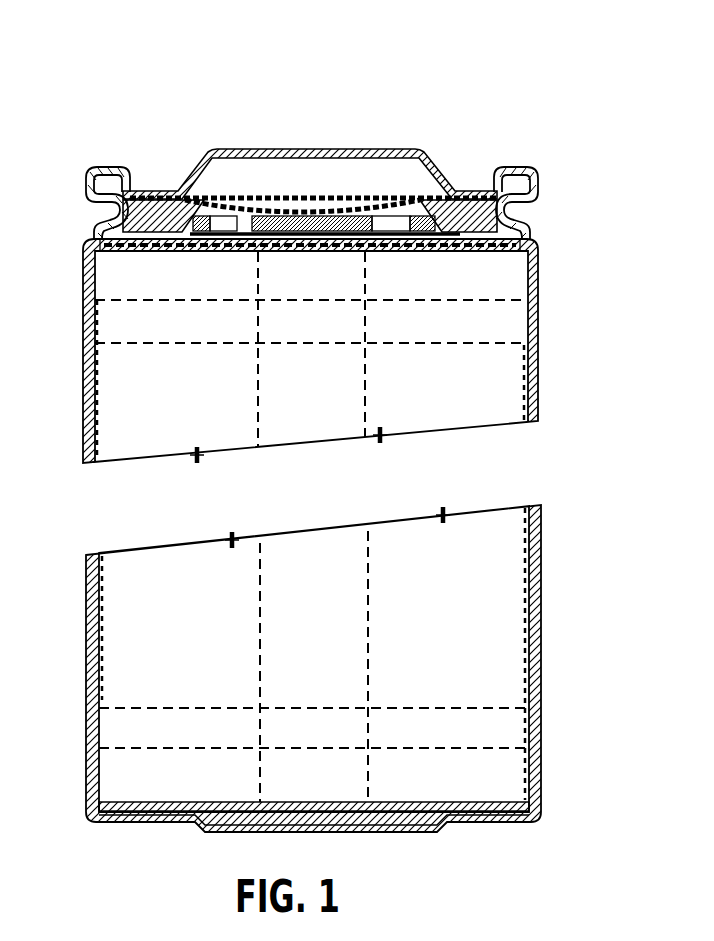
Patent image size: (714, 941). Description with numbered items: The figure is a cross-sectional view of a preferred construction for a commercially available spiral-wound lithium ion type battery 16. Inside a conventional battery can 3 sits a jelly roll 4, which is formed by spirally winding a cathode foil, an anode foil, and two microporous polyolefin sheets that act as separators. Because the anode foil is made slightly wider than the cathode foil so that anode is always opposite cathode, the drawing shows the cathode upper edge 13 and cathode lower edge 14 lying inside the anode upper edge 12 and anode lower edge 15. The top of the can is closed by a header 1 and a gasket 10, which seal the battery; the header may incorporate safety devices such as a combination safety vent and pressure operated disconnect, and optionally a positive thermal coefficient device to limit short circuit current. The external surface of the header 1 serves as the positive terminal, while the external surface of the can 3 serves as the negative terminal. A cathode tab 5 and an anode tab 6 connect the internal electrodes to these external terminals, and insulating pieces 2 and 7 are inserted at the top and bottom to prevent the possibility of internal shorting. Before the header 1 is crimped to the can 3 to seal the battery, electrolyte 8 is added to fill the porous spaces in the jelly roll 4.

The battery 16 is at (180, 103).
The header 1 is at (318, 151).
The gasket 10 is at (537, 180).
The insulating piece 2 is at (537, 245).
The battery can 3 is at (540, 330).
The jelly roll 4 is at (495, 397).
The anode upper edge 12 is at (122, 300).
The cathode upper edge 13 is at (408, 345).
The cathode tab 5 is at (258, 412).
The electrolyte 8 is at (503, 577).
The cathode lower edge 14 is at (143, 707).
The anode lower edge 15 is at (145, 750).
The anode tab 6 is at (532, 778).
The insulating piece 7 is at (542, 820).